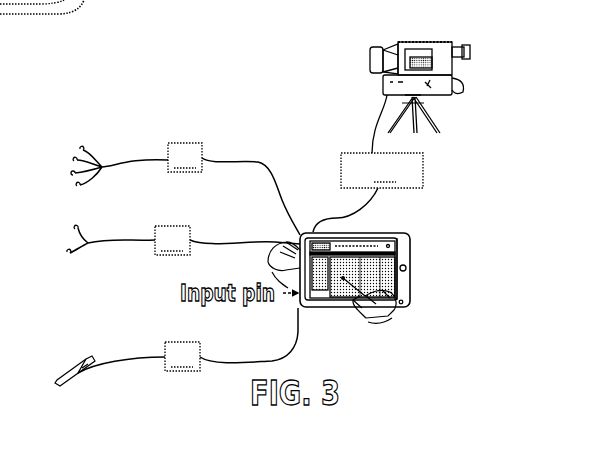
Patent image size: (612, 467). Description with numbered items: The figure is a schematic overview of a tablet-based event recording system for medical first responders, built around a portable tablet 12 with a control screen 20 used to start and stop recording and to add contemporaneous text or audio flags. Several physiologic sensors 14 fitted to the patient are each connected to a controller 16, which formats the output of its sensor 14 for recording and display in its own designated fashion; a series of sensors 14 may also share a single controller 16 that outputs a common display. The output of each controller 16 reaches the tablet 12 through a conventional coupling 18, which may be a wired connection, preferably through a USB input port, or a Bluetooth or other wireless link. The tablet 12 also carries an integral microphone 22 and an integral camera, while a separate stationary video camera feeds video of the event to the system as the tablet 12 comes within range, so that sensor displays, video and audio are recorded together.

The portable tablet 12 is at (333, 308).
The sensors 14 is at (100, 153).
The controller 16 is at (387, 95).
The coupling 18 is at (284, 190).
The control screen 20 is at (407, 238).
The microphone 22 is at (398, 308).